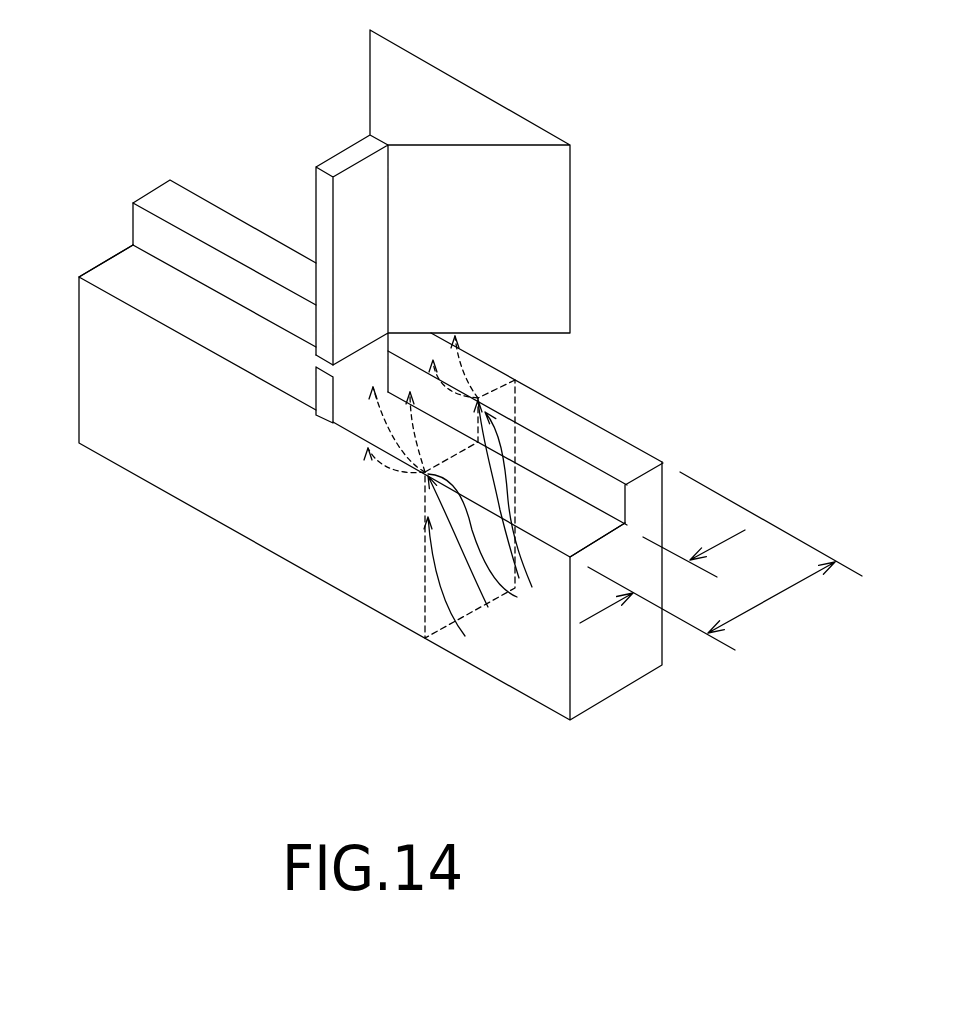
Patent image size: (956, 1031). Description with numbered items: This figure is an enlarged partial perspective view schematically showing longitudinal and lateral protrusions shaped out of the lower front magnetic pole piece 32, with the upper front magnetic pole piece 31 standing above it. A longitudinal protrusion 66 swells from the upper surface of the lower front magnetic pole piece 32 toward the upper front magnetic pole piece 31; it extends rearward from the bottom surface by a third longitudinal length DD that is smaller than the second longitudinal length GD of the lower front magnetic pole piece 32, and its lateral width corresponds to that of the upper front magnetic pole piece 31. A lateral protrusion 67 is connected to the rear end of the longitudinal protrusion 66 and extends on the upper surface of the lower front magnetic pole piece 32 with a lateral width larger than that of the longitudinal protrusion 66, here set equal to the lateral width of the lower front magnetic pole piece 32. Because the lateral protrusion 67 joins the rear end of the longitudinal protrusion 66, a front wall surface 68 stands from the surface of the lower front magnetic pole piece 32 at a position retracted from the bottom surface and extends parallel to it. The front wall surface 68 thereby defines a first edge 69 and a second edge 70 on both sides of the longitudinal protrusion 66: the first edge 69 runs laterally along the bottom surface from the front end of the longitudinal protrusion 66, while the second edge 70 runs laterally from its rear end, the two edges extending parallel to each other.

The upper front magnetic pole piece 31 is at (368, 253).
The lower front magnetic pole piece 32 is at (168, 482).
The longitudinal protrusion 66 is at (316, 390).
The lateral protrusion 67 is at (515, 380).
The front wall surface 68 is at (240, 278).
The first edge 69 is at (116, 297).
The second edge 70 is at (157, 219).
The second longitudinal length GD is at (725, 561).
The third longitudinal length DD is at (662, 594).